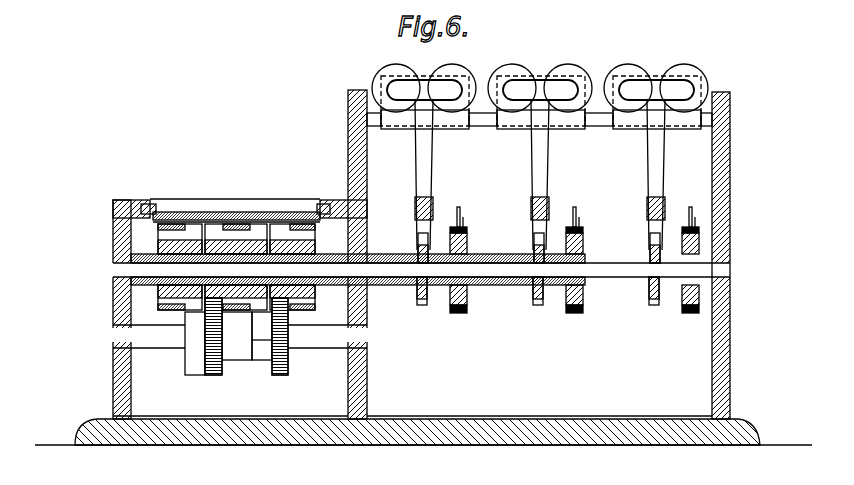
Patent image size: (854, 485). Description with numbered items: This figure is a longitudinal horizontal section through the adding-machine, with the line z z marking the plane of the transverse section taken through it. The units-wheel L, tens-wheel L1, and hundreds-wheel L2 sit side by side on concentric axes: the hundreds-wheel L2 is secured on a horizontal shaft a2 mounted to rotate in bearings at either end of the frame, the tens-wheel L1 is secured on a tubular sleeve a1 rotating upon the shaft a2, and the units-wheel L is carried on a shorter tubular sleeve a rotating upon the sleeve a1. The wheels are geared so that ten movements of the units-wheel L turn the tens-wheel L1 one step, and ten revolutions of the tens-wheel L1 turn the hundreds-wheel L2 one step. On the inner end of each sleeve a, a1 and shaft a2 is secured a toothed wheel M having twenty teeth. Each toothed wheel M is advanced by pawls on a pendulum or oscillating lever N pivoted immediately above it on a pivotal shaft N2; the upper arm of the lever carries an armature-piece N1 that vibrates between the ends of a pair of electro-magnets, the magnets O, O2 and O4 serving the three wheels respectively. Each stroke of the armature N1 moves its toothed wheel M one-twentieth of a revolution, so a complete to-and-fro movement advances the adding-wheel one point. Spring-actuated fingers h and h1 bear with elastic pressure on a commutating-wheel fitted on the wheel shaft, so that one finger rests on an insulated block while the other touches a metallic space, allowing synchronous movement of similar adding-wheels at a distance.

The section line z is at (369, 468).
The electro-magnet O is at (398, 73).
The electro-magnet O2 is at (514, 72).
The electro-magnet O4 is at (630, 70).
The armature-piece N1 is at (540, 90).
The pivotal shaft N2 is at (594, 120).
The pendulum or oscillating lever N is at (531, 175).
The toothed wheel M is at (417, 238).
The spring-actuated finger h is at (466, 230).
The spring-actuated finger h1 is at (457, 213).
The tubular shaft or sleeve a is at (382, 254).
The tubular shaft or sleeve a1 is at (493, 258).
The horizontal shaft a2 is at (667, 270).
The units-wheel L is at (303, 213).
The tens-wheel L1 is at (240, 213).
The hundreds-wheel L2 is at (177, 213).